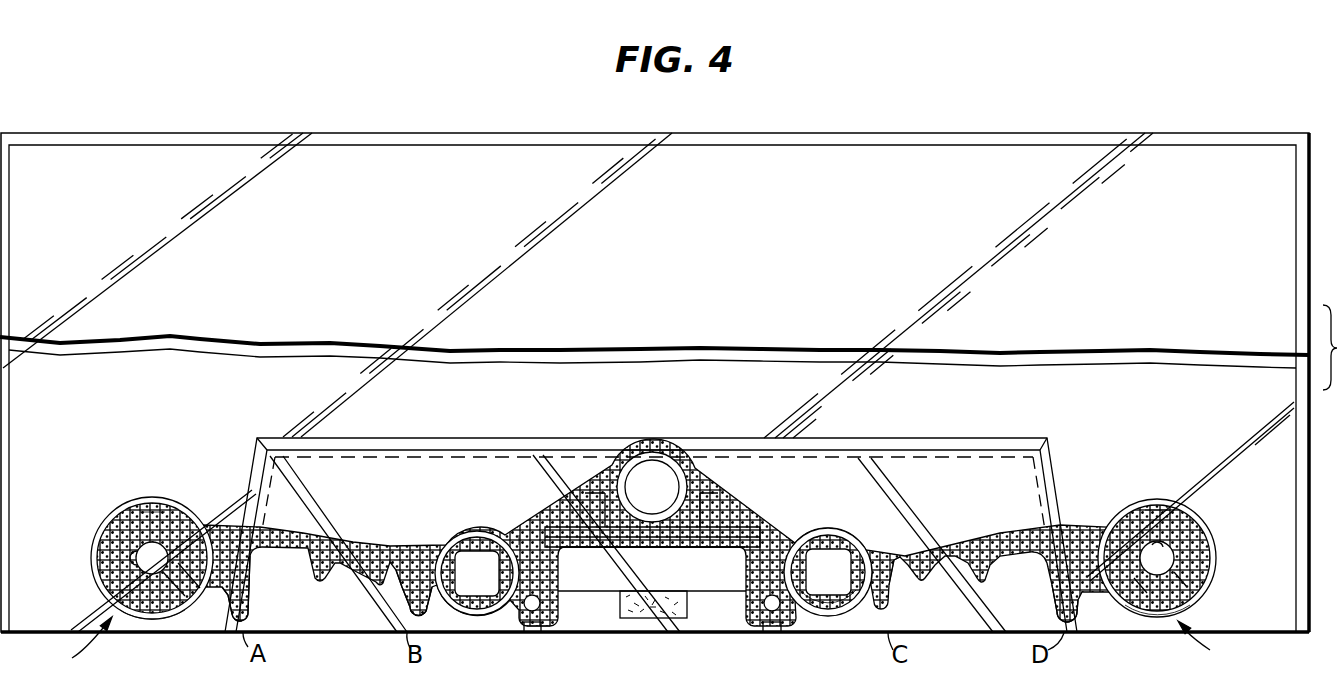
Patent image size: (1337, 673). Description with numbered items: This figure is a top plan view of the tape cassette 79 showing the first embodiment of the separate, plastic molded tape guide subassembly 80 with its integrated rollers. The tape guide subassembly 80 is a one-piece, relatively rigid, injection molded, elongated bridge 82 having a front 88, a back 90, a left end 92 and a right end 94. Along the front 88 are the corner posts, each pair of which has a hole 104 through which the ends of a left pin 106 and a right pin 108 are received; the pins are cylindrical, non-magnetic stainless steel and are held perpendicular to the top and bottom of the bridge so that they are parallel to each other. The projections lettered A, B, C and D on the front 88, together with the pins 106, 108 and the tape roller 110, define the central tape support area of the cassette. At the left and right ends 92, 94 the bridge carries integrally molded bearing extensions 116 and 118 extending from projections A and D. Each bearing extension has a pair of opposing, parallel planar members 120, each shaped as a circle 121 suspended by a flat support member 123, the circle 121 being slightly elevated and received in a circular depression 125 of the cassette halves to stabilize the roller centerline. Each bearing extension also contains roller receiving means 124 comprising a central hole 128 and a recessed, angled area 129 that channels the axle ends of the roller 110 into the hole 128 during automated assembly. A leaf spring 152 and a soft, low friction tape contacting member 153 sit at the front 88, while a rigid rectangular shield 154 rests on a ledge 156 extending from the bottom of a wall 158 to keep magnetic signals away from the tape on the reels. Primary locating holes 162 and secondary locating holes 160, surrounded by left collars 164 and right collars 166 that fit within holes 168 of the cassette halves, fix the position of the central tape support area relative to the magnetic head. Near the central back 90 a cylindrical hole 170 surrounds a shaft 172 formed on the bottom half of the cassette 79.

The tape cassette 79 is at (355, 123).
The tape guide subassembly 80 is at (447, 400).
The bridge 82 is at (697, 458).
The front 88 is at (560, 614).
The back 90 is at (582, 485).
The left end 92 is at (219, 500).
The right end 94 is at (1103, 502).
The hole 104 is at (520, 620).
The left pin 106 is at (540, 605).
The right pin 108 is at (772, 609).
The tape roller 110 is at (108, 538).
The bearing extension 116 is at (76, 645).
The bearing extension 118 is at (1207, 642).
The planar member 120 is at (128, 517).
The circle 121 is at (170, 525).
The flat support member 123 is at (213, 585).
The roller receiving means 124 is at (155, 520).
The circular depression 125 is at (170, 611).
The hole 128 is at (135, 562).
The recessed, angled area 129 is at (130, 605).
The leaf spring 152 is at (700, 593).
The tape contacting member 153 is at (657, 613).
The shield 154 is at (730, 546).
The ledge 156 is at (647, 548).
The wall 158 is at (730, 530).
The secondary locating hole 160 is at (463, 557).
The primary locating hole 162 is at (830, 552).
The left collar 164 is at (438, 560).
The right collar 166 is at (838, 602).
The hole 168 is at (508, 530).
The cylindrical hole 170 is at (657, 445).
The shaft 172 is at (643, 470).